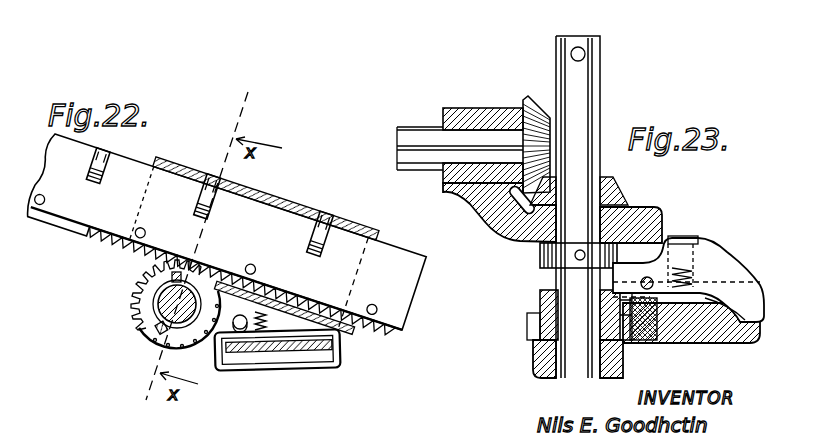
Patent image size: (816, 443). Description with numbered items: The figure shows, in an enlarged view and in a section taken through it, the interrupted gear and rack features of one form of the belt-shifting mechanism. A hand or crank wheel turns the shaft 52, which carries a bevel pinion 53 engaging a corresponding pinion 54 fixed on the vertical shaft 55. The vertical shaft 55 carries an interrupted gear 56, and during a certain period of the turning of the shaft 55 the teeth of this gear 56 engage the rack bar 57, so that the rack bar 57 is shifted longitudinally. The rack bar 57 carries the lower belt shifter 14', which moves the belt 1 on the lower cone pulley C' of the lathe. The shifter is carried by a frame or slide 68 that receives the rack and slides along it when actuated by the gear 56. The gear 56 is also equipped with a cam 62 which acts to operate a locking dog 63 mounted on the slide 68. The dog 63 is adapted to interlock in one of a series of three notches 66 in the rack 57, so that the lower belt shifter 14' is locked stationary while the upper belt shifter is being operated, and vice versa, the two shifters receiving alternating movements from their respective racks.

In FIG. 22, the belt 1 is at (317, 350).
In FIG. 22, the lower belt shifter 14' is at (295, 321).
In FIG. 23, the shaft 52 is at (468, 137).
In FIG. 23, the bevel pinion 53 is at (532, 100).
In FIG. 23, the pinion 54 is at (628, 188).
In FIG. 22, the vertical shaft 55 is at (165, 307).
In FIG. 23, the vertical shaft 55 is at (572, 365).
In FIG. 22, the interrupted gear 56 is at (140, 293).
In FIG. 23, the interrupted gear 56 is at (540, 303).
In FIG. 22, the rack bar 57 is at (223, 241).
In FIG. 23, the rack bar 57 is at (688, 343).
In FIG. 22, the cam 62 is at (177, 333).
In FIG. 23, the cam 62 is at (540, 293).
In FIG. 23, the locking dog 63 is at (728, 272).
In FIG. 22, the notches 66 is at (225, 188).
In FIG. 23, the notches 66 is at (735, 343).
In FIG. 22, the slide 68 is at (357, 230).
In FIG. 22, the lower cone pulley C' is at (278, 369).